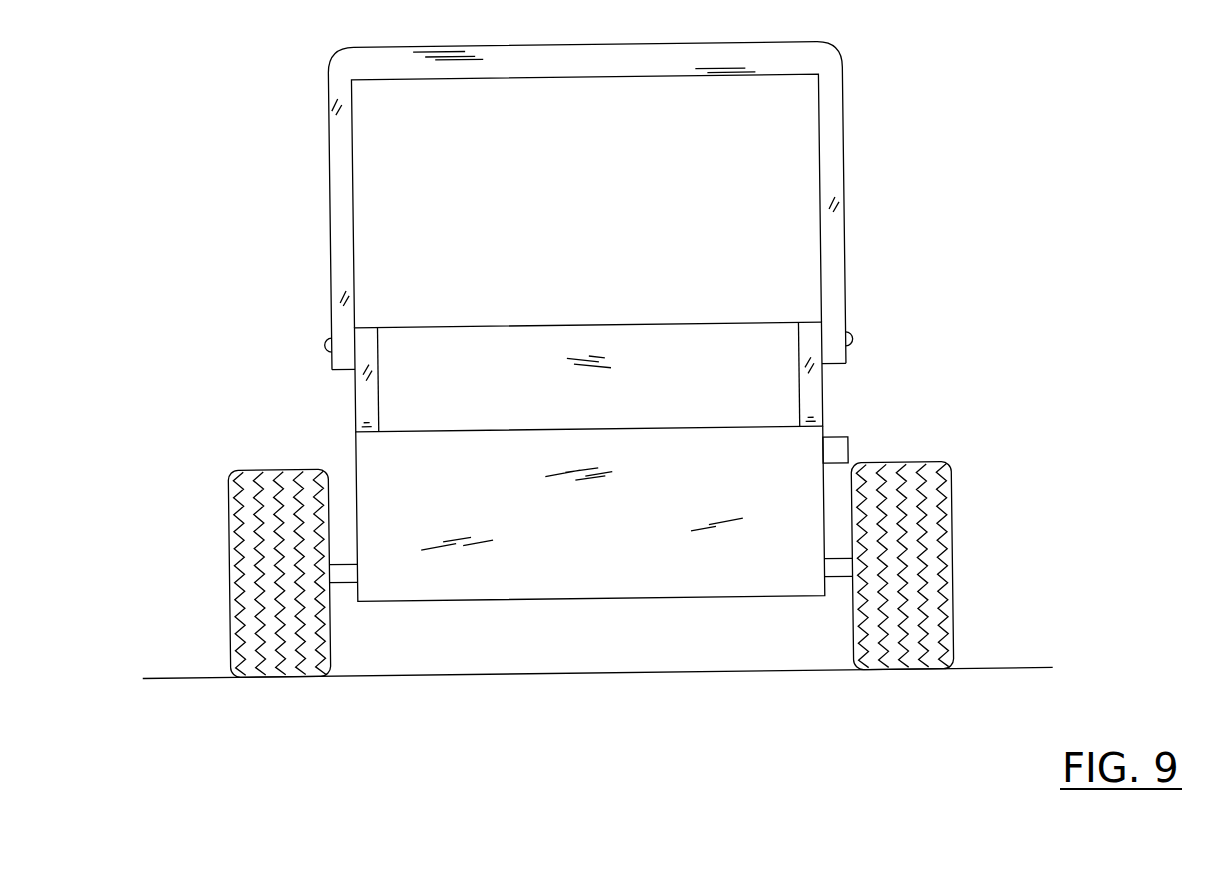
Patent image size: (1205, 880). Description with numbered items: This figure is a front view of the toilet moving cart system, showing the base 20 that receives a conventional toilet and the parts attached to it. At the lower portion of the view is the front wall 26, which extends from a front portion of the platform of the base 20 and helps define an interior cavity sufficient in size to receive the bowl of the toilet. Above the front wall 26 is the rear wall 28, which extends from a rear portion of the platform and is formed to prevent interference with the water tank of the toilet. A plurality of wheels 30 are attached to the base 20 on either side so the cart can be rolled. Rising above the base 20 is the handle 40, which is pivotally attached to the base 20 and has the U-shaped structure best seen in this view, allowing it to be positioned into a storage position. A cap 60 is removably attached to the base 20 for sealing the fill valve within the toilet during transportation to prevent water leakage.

The base 20 is at (582, 353).
The front wall 26 is at (516, 586).
The rear wall 28 is at (464, 340).
The wheels 30 is at (234, 553).
The handle 40 is at (837, 113).
The cap 60 is at (848, 445).